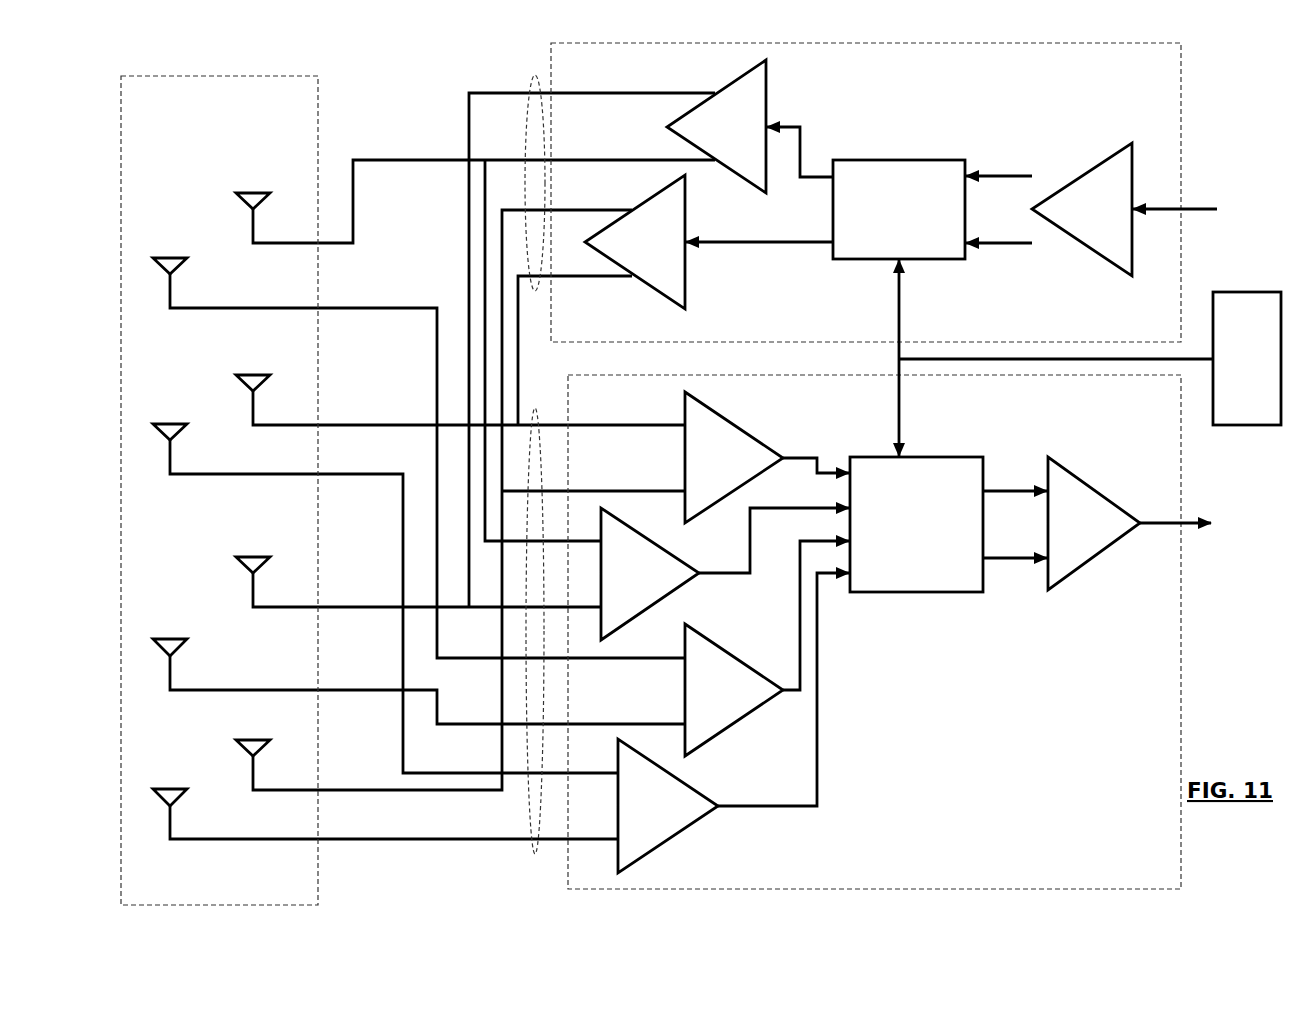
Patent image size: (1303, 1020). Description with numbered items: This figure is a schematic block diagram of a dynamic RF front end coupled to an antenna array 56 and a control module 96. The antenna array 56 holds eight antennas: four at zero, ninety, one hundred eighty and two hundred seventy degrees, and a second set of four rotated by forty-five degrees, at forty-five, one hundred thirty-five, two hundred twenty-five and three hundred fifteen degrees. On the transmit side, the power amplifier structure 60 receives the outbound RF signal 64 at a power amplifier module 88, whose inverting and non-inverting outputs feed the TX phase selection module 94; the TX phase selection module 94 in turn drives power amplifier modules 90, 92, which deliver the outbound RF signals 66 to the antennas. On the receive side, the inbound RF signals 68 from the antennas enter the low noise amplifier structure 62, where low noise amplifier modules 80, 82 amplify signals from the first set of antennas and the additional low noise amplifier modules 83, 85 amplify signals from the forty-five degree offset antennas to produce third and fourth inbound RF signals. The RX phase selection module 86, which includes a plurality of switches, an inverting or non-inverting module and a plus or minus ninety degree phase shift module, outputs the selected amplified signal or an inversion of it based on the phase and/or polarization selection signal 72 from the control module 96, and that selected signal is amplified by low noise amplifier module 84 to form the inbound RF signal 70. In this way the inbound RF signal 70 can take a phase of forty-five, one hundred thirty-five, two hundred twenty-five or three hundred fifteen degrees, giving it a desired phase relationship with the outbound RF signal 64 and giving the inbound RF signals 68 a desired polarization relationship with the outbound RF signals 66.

The antenna array 56 is at (219, 490).
The power amplifier structure 60 is at (866, 192).
The low noise amplifier structure 62 is at (874, 632).
The outbound RF signal 64 is at (1210, 210).
The outbound RF signals 66 is at (535, 75).
The inbound RF signals 68 is at (533, 855).
The inbound RF signal 70 is at (1212, 522).
The phase and/or polarization selection signal 72 is at (900, 293).
The low noise amplifier module 80 is at (734, 457).
The low noise amplifier module 82 is at (650, 574).
The low noise amplifier module 83 is at (734, 690).
The low noise amplifier module 84 is at (1094, 523).
The low noise amplifier module 85 is at (668, 806).
The RX phase selection module 86 is at (916, 524).
The power amplifier module 88 is at (1082, 209).
The power amplifier module 90 is at (716, 126).
The power amplifier module 92 is at (635, 242).
The TX phase selection module 94 is at (899, 209).
The control module 96 is at (1250, 358).